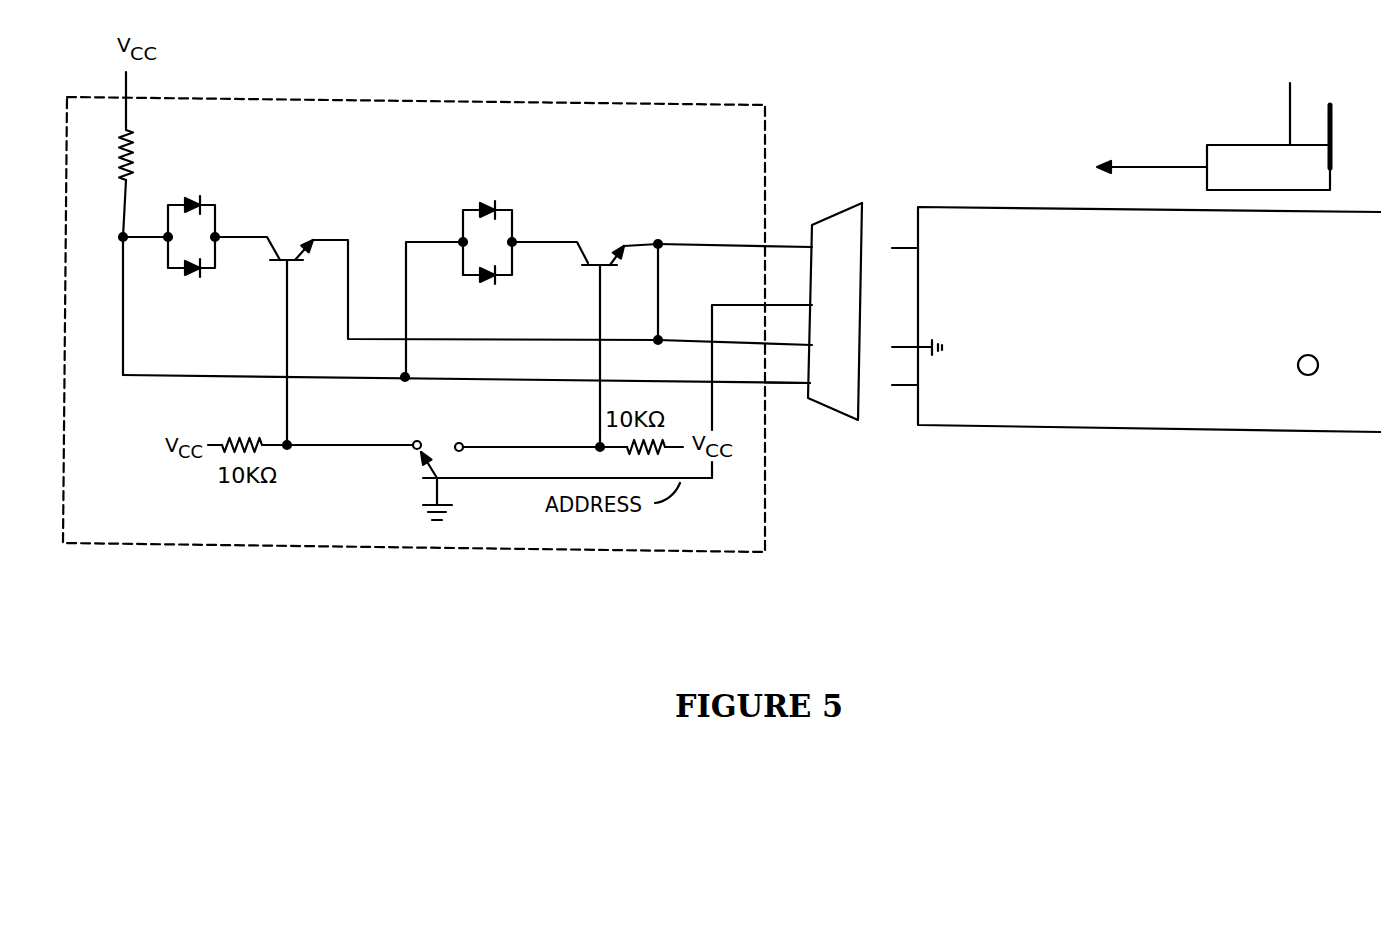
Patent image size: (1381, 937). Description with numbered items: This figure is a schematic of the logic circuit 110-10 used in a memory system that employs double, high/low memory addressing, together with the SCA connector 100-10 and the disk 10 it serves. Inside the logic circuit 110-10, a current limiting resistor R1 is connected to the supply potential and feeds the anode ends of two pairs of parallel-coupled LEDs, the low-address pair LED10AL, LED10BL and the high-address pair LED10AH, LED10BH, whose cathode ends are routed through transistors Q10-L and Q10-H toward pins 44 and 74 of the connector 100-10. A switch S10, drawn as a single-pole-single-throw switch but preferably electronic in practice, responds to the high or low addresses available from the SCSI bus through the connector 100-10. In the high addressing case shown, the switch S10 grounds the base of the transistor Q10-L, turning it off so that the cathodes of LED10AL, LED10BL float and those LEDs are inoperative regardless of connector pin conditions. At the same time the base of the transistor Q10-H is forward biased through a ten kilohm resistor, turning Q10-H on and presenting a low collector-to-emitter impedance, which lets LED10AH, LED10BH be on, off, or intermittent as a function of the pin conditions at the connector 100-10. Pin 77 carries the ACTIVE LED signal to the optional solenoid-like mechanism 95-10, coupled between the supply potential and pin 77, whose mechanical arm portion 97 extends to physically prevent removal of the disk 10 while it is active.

The logic circuit 110-10 is at (592, 103).
The current limiting resistor R1 is at (140, 155).
The low-address LED LED10AL is at (186, 202).
The low-address LED LED10BL is at (199, 280).
The low-address transistor Q10-L is at (295, 238).
The high-address LED LED10AH is at (498, 207).
The high-address LED LED10BH is at (507, 283).
The high-address transistor Q10-H is at (592, 242).
The switch S10 is at (443, 464).
The SCA connector pin 44 is at (747, 248).
The SCA connector pin 74 is at (747, 348).
The SCA connector pin 77 is at (801, 386).
The SCA connector 100-10 is at (822, 402).
The disk 10 is at (1136, 319).
The solenoid-like mechanism 95-10 is at (1263, 143).
The mechanical arm portion 97 is at (1333, 125).